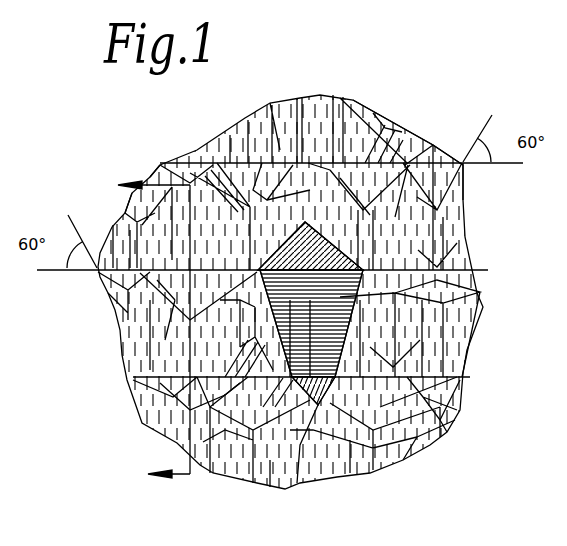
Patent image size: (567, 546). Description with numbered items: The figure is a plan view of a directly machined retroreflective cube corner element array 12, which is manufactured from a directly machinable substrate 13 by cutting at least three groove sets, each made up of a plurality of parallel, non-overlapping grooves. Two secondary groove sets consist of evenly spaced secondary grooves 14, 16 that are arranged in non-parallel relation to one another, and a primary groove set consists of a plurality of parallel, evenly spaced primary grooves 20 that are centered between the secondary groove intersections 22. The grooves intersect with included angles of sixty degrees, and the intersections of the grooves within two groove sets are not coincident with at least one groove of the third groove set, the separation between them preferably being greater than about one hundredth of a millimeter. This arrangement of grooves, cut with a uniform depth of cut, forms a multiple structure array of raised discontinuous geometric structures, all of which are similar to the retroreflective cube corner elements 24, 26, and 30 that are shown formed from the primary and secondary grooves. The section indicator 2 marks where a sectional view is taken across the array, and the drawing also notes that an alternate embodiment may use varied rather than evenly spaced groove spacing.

The section line 2- 2 is at (143, 330).
The retroreflective cube corner element array 12 is at (232, 472).
The directly machinable substrate 13 is at (420, 432).
The secondary groove 14 is at (440, 395).
The secondary groove 16 is at (352, 140).
The primary groove 20 is at (160, 164).
The secondary groove intersection 22 is at (282, 205).
The cube corner element 24 is at (297, 483).
The cube corner element 26 is at (447, 305).
The cube corner element 30 is at (420, 150).